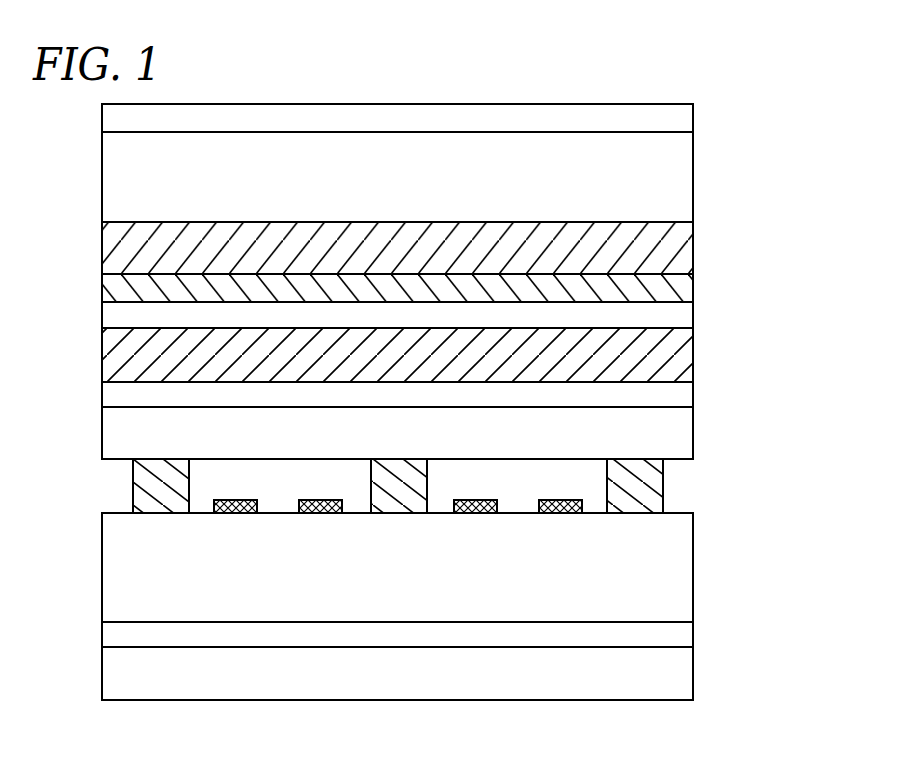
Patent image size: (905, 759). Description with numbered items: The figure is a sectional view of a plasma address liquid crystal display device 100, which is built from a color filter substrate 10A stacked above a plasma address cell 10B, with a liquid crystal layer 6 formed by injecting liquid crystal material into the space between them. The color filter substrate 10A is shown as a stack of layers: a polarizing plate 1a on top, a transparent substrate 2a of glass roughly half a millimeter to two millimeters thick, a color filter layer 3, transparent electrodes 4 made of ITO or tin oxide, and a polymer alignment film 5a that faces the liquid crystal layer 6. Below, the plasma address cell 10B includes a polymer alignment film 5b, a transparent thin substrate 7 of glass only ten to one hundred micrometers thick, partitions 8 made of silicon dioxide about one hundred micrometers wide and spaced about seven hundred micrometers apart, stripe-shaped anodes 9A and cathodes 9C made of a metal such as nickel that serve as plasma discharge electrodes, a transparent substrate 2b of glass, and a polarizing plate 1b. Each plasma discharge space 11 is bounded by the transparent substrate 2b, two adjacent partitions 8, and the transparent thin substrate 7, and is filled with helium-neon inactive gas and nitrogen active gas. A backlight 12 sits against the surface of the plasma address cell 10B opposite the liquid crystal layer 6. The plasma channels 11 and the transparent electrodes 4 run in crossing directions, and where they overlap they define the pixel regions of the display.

The plasma address liquid crystal display device 100 is at (640, 53).
The color filter substrate 10A is at (798, 113).
The plasma address cell 10B is at (798, 392).
The polarizing plate 1a is at (680, 123).
The transparent substrate 2a is at (680, 183).
The color filter layer 3 is at (685, 255).
The transparent electrodes 4 is at (685, 293).
The alignment film 5a is at (683, 319).
The liquid crystal layer 6 is at (685, 365).
The alignment film 5b is at (685, 398).
The transparent thin substrate 7 is at (685, 443).
The partitions 8 is at (655, 487).
The anodes 9A is at (565, 513).
The cathodes 9C is at (480, 513).
The plasma discharge spaces 11 is at (207, 479).
The transparent substrate 2b is at (680, 603).
The polarizing plate 1b is at (683, 637).
The backlight 12 is at (683, 688).